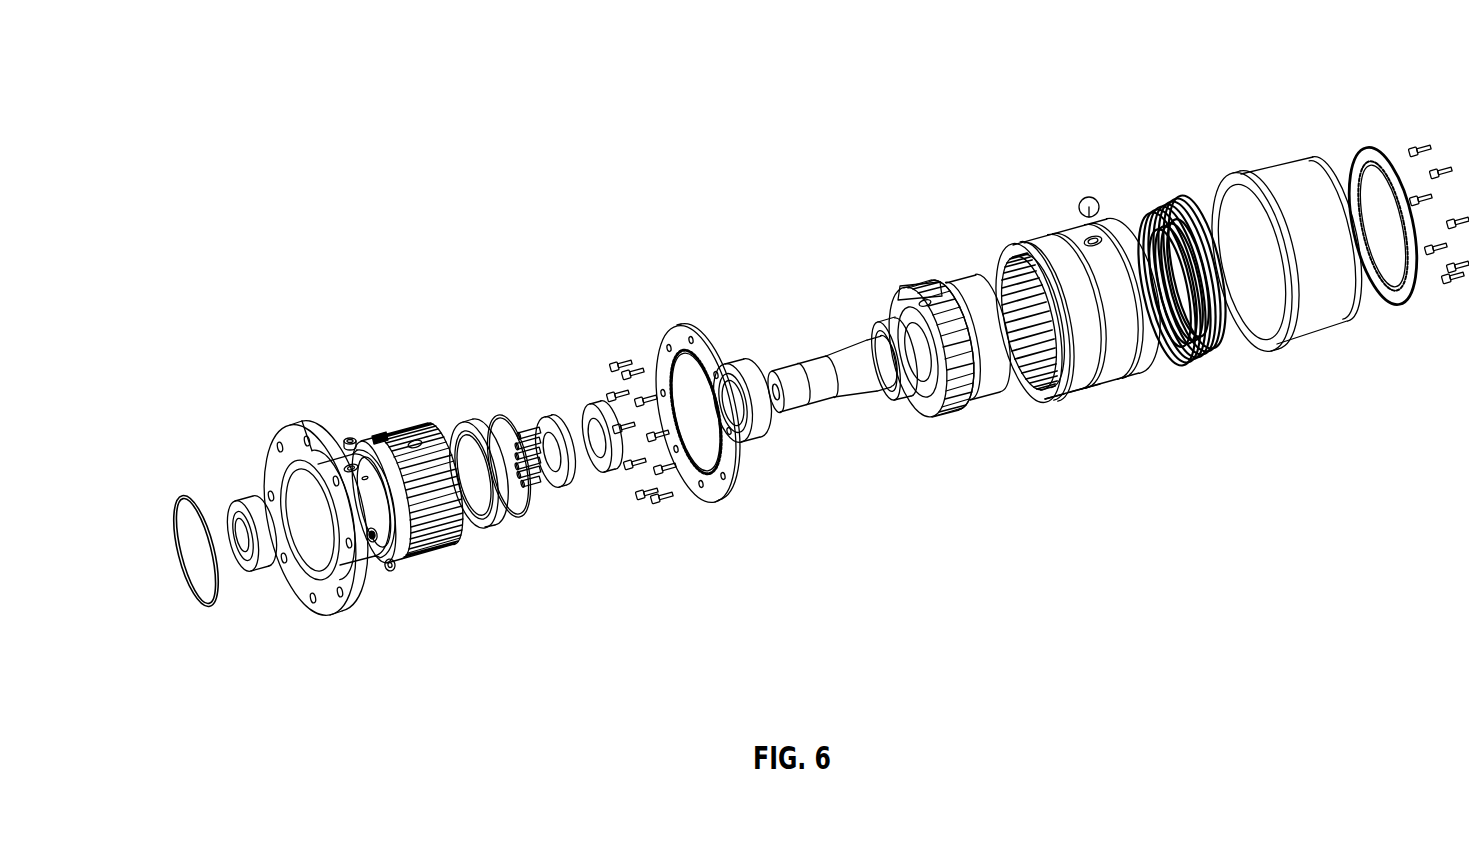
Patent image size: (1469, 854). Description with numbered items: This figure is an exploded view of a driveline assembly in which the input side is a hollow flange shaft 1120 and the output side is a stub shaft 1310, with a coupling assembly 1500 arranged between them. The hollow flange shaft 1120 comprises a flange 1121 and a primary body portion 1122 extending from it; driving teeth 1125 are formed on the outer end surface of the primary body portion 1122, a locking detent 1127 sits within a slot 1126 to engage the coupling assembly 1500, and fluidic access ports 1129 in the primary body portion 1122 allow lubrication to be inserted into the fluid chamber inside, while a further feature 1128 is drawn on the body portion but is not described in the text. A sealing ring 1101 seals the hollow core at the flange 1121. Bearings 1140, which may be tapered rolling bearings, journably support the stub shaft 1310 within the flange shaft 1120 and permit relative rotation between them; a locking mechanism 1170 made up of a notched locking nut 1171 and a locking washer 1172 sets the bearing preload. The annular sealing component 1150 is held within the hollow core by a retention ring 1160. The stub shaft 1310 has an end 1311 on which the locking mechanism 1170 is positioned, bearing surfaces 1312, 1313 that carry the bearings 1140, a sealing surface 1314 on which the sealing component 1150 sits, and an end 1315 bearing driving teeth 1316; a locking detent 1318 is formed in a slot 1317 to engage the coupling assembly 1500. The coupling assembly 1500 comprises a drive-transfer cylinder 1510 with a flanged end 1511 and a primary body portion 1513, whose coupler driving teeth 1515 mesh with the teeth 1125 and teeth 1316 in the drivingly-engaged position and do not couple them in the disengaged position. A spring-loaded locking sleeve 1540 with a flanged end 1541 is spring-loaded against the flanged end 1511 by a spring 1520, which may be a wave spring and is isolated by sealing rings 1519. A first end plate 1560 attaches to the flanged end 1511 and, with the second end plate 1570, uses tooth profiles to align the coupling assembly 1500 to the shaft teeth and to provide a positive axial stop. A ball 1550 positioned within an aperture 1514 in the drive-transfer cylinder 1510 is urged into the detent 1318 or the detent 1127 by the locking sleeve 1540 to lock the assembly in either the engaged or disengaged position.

The sealing ring 1101 is at (192, 587).
The bearings 1140 is at (252, 577).
The flange 1121 is at (320, 607).
The hollow flange shaft 1120 is at (357, 578).
The primary body portion 1122 is at (365, 475).
The driving teeth 1125 is at (442, 540).
The slot 1126 is at (381, 434).
The locking detent 1127 is at (416, 442).
The hub hole 1128 is at (345, 465).
The fluidic access ports 1129 is at (346, 437).
The annular sealing component 1150 is at (487, 528).
The retention ring 1160 is at (525, 514).
The locking mechanism 1170 is at (602, 494).
The notched locking nut 1171 is at (540, 427).
The locking washer 1172 is at (590, 407).
The first end plate 1560 is at (717, 498).
The stub shaft 1310 is at (844, 389).
The end 1311 is at (787, 406).
The bearing surface 1312 is at (805, 373).
The bearing surface 1313 is at (880, 345).
The sealing surface 1314 is at (878, 337).
The end 1315 is at (987, 372).
The driving teeth 1316 is at (924, 300).
The slot 1317 is at (918, 291).
The locking detent 1318 is at (940, 288).
The coupling assembly 1500 is at (1213, 281).
The drive-transfer cylinder 1510 is at (1131, 297).
The flanged end 1511 is at (1058, 400).
The primary body portion 1513 is at (1090, 340).
The aperture 1514 is at (1096, 233).
The coupler driving teeth 1515 is at (1002, 282).
The sealing rings 1519 is at (1016, 242).
The spring 1520 is at (1170, 202).
The spring-loaded locking sleeve 1540 is at (1298, 178).
The flanged end 1541 is at (1240, 172).
The ball 1550 is at (1087, 197).
The second end plate 1570 is at (1378, 150).